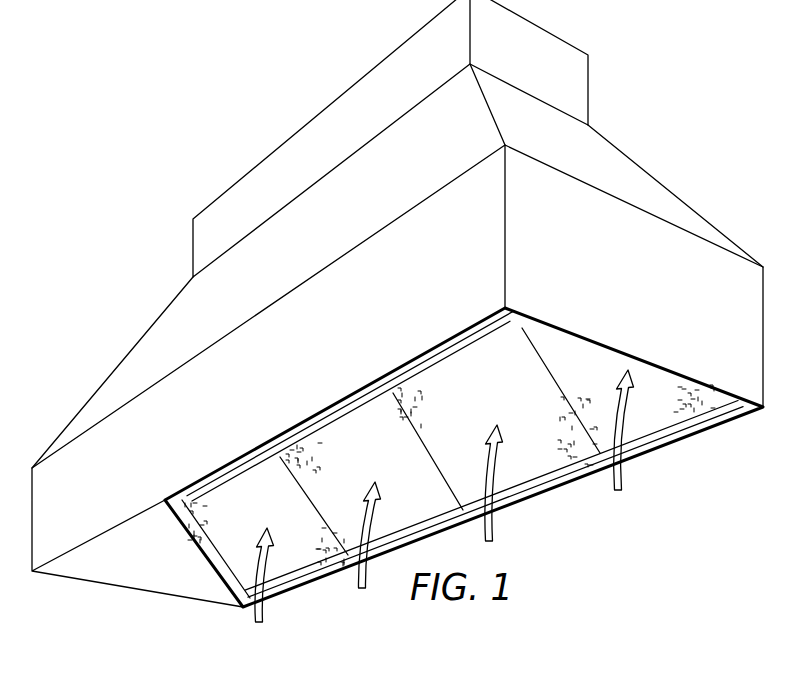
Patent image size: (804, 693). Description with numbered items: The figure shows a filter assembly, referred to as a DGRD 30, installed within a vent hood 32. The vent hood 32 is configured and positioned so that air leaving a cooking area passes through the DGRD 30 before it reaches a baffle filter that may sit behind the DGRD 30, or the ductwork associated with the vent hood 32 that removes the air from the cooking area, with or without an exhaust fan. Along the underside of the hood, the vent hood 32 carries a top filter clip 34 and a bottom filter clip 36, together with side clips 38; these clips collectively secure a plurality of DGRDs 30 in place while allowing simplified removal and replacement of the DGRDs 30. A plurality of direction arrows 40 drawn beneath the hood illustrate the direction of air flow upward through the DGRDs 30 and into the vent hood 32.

The DGRD 30 is at (569, 514).
The vent hood 32 is at (650, 293).
The top filter clip 34 is at (453, 365).
The bottom filter clip 36 is at (433, 520).
The side clip 38 is at (207, 551).
The direction arrows 40 is at (358, 580).